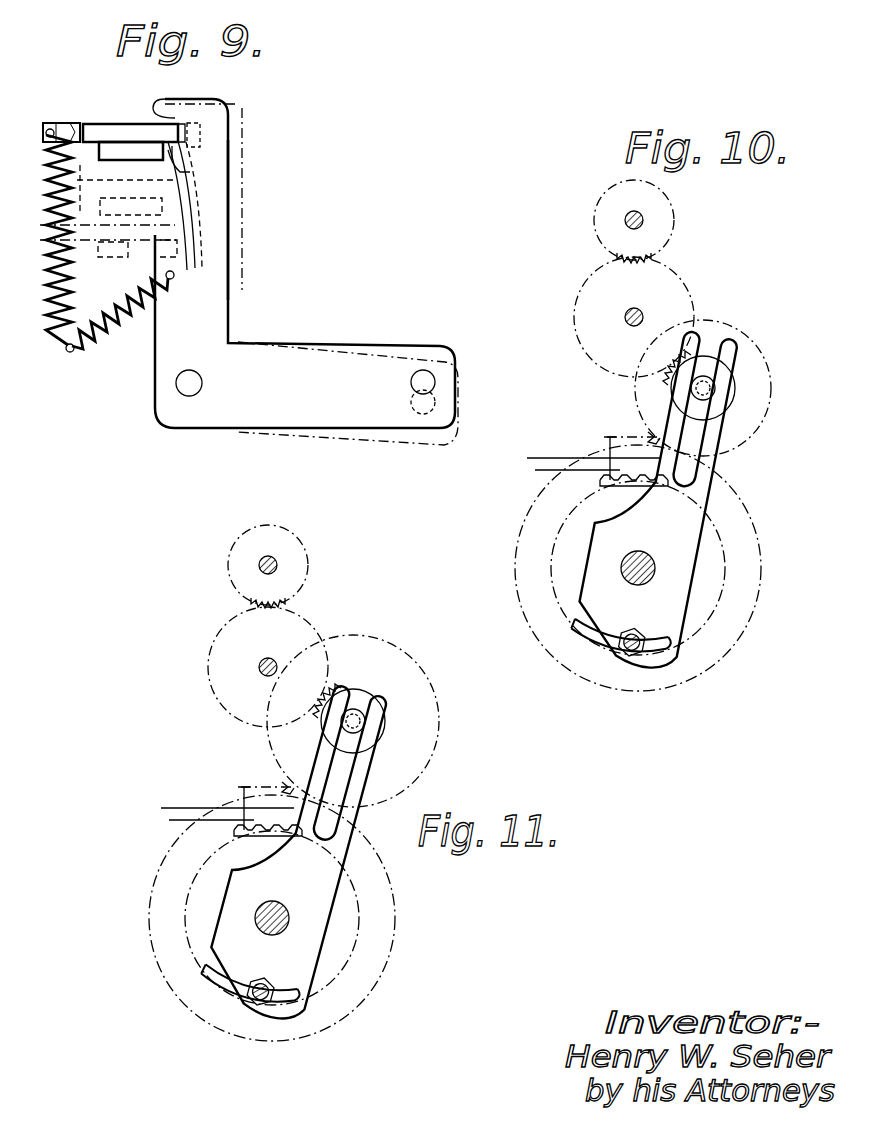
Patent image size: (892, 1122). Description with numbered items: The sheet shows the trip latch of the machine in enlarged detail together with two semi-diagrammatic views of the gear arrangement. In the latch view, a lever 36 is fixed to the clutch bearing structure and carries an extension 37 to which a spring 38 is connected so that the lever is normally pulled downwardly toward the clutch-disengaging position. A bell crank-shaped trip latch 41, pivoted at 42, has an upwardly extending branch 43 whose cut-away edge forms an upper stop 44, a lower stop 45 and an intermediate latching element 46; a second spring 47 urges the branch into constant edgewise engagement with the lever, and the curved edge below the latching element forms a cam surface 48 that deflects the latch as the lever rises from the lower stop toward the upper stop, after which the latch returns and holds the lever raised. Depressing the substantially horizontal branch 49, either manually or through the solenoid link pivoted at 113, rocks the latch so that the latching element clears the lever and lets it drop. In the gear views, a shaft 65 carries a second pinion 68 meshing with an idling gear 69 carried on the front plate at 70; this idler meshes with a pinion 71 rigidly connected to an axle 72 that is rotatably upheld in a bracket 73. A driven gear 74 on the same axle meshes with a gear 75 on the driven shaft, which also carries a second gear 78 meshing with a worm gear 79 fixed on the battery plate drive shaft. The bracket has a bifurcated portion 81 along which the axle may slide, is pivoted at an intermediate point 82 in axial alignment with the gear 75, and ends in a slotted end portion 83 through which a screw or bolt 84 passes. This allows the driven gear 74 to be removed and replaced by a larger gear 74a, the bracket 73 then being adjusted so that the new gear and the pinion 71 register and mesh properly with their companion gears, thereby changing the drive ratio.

In FIG. 9, the lever 36 is at (118, 140).
In FIG. 9, the extension 37 is at (63, 120).
In FIG. 9, the spring 38 is at (82, 273).
In FIG. 9, the trip latch 41 is at (175, 417).
In FIG. 9, the pivot 42 is at (201, 390).
In FIG. 9, the upwardly extending branch 43 is at (230, 218).
In FIG. 9, the upper stop 44 is at (152, 110).
In FIG. 9, the lower stop 45 is at (191, 210).
In FIG. 9, the latching element 46 is at (178, 148).
In FIG. 9, the spring 47 is at (127, 332).
In FIG. 9, the cam surface 48 is at (182, 173).
In FIG. 9, the horizontal branch 49 is at (328, 413).
In FIG. 9, the pivot 113 is at (435, 382).
In FIG. 10, the shaft 65 is at (648, 220).
In FIG. 11, the shaft 65 is at (282, 565).
In FIG. 10, the second pinion 68 is at (601, 238).
In FIG. 11, the second pinion 68 is at (230, 567).
In FIG. 10, the idling gear 69 is at (596, 316).
In FIG. 11, the idling gear 69 is at (225, 692).
In FIG. 10, the idling gear mounting 70 is at (632, 312).
In FIG. 11, the idling gear mounting 70 is at (258, 667).
In FIG. 10, the pinion 71 is at (668, 386).
In FIG. 11, the pinion 71 is at (315, 718).
In FIG. 10, the axle 72 is at (716, 390).
In FIG. 11, the axle 72 is at (368, 721).
In FIG. 10, the bracket 73 is at (685, 540).
In FIG. 11, the bracket 73 is at (320, 887).
In FIG. 10, the gear 74 is at (750, 438).
In FIG. 11, the larger gear 74a is at (372, 800).
In FIG. 10, the gear 75 is at (718, 478).
In FIG. 10, the second gear 78 is at (612, 483).
In FIG. 11, the second gear 78 is at (228, 838).
In FIG. 10, the worm gear 79 is at (560, 472).
In FIG. 11, the worm gear 79 is at (195, 808).
In FIG. 10, the bifurcated portion 81 is at (648, 437).
In FIG. 11, the bifurcated portion 81 is at (284, 786).
In FIG. 10, the pivot 82 is at (657, 573).
In FIG. 11, the pivot 82 is at (292, 925).
In FIG. 10, the slotted end portion 83 is at (600, 642).
In FIG. 11, the slotted end portion 83 is at (230, 993).
In FIG. 10, the screw or bolt 84 is at (645, 645).
In FIG. 11, the screw or bolt 84 is at (272, 1008).